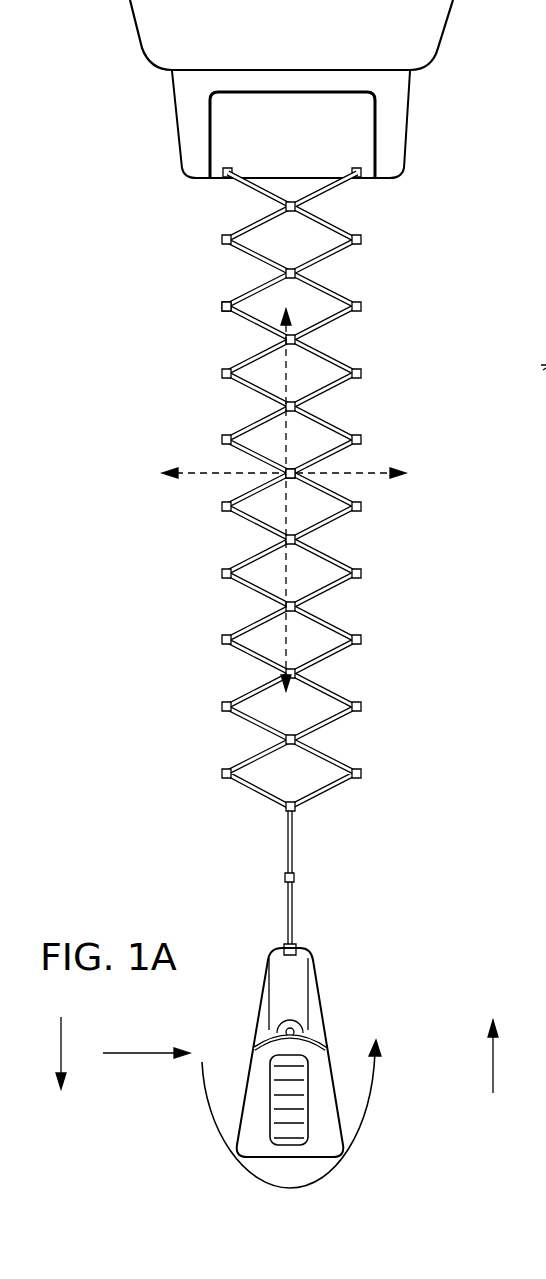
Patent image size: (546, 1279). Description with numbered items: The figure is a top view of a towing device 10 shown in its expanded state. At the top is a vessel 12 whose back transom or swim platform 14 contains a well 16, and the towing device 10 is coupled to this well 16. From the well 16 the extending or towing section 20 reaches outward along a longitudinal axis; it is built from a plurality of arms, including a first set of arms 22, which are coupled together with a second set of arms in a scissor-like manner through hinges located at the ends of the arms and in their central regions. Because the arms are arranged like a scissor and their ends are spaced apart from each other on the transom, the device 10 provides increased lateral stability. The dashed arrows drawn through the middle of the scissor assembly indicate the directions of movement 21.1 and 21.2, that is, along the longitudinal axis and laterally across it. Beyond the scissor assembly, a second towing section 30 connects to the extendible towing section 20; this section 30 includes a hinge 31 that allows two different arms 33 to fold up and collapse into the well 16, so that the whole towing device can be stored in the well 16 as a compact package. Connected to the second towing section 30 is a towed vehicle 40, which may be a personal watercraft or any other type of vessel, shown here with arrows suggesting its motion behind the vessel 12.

The towing device 10 is at (347, 475).
The vessel 12 is at (195, 37).
The back transom or swim platform 14 is at (190, 125).
The well 16 is at (318, 159).
The extending or towing section 20 is at (325, 428).
The vertical extension direction 21.1 is at (290, 366).
The lateral direction 21.2 is at (190, 478).
The first set of arms 22 is at (222, 307).
The second towing section 30 is at (266, 880).
The hinge 31 is at (295, 878).
The arms 33 is at (288, 837).
The towed vehicle 40 is at (318, 1013).